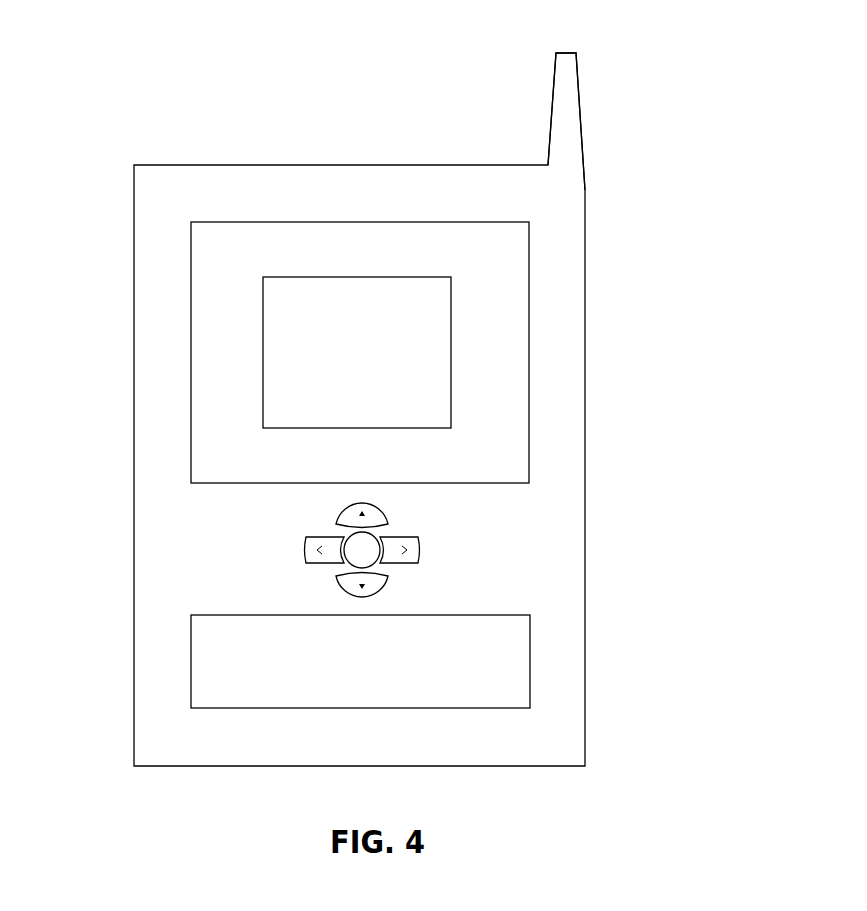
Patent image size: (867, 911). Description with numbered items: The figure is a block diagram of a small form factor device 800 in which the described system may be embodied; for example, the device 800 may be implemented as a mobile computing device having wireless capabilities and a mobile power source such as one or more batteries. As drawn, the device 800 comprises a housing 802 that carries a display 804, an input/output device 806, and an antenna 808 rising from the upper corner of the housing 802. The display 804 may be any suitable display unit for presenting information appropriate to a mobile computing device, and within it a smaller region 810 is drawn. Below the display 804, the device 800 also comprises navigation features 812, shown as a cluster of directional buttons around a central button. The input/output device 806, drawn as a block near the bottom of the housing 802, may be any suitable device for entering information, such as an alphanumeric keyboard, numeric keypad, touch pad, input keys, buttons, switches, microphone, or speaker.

The small form factor device 800 is at (152, 70).
The housing 802 is at (585, 465).
The display 804 is at (529, 240).
The input/output (I/O) device 806 is at (530, 653).
The antenna 808 is at (552, 102).
The display window / inset region 810 is at (451, 373).
The navigation features 812 is at (432, 540).